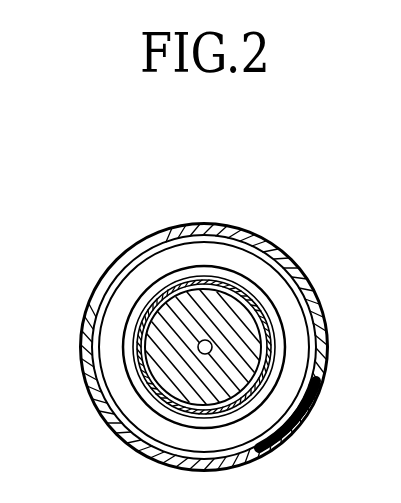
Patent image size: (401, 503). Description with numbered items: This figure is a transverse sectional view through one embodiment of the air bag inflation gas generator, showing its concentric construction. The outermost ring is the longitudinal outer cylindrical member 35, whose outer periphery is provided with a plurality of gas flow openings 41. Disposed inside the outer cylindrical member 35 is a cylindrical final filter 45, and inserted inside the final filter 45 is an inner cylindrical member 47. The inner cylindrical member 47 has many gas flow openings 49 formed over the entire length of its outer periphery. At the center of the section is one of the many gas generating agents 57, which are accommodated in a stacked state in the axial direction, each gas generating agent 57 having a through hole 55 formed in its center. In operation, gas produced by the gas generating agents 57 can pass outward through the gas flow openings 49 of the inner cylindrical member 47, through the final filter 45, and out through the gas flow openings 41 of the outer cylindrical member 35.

The outer cylindrical member 35 is at (277, 253).
The gas flow openings 41 is at (237, 233).
The final filter 45 is at (278, 293).
The inner cylindrical member 47 is at (285, 357).
The gas flow openings 49 is at (275, 412).
The through hole 55 is at (199, 350).
The gas generating agents 57 is at (157, 326).